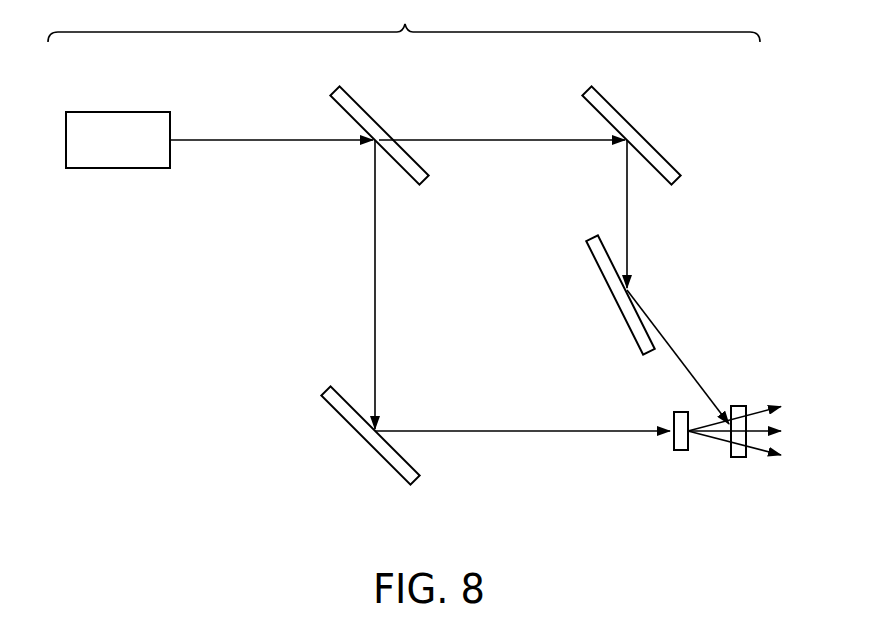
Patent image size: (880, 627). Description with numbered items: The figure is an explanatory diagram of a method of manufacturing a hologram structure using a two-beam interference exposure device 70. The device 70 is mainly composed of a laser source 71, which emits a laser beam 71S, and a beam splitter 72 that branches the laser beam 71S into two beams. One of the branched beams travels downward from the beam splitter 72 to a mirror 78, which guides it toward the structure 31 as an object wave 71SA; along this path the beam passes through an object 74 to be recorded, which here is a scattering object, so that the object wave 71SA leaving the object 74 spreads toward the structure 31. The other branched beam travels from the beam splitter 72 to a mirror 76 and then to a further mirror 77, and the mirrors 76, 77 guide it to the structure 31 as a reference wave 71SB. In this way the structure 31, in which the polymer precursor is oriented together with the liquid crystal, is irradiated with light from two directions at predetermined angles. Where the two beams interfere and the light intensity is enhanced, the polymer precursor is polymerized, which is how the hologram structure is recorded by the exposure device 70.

The two-beam interference exposure device 70 is at (404, 21).
The laser source 71 is at (143, 120).
The laser beam 71S is at (253, 138).
The beam splitter 72 is at (373, 117).
The mirror 76 is at (627, 117).
The mirror 77 is at (628, 328).
The reference wave 71SB is at (680, 362).
The mirror 78 is at (378, 457).
The object to be recorded 74 is at (682, 445).
The object wave 71SA is at (708, 437).
The structure 31 is at (737, 450).